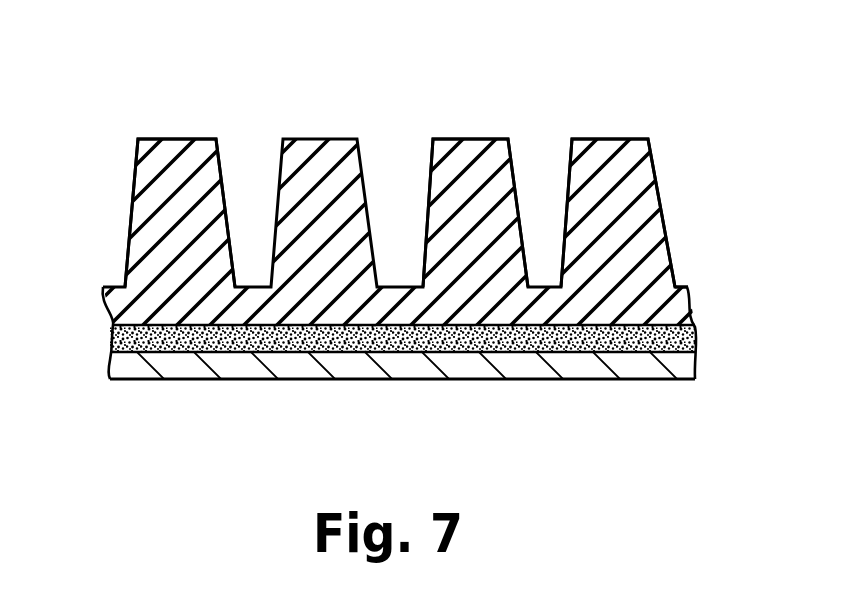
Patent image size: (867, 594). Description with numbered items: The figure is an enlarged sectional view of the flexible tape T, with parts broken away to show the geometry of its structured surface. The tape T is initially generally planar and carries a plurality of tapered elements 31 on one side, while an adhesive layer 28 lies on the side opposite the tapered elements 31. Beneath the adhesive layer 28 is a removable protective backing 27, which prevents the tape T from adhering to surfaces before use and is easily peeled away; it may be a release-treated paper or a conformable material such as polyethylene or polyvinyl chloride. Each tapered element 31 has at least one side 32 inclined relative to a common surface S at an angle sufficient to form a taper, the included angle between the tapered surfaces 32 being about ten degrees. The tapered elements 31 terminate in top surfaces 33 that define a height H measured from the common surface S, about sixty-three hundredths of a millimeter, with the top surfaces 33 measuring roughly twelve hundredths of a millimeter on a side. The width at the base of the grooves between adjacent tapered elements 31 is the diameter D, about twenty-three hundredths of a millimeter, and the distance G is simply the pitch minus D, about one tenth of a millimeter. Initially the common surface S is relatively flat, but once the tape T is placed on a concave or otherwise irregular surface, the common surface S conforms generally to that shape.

The tapered elements 31 is at (673, 172).
The top surfaces 33 is at (183, 139).
The inclined side 32 is at (432, 146).
The adhesive layer 28 is at (698, 341).
The removable protective backing 27 is at (134, 364).
The common surface S is at (677, 286).
The flexible tape T is at (144, 99).
The height H is at (138, 139).
The distance G is at (272, 287).
The diameter D is at (530, 287).